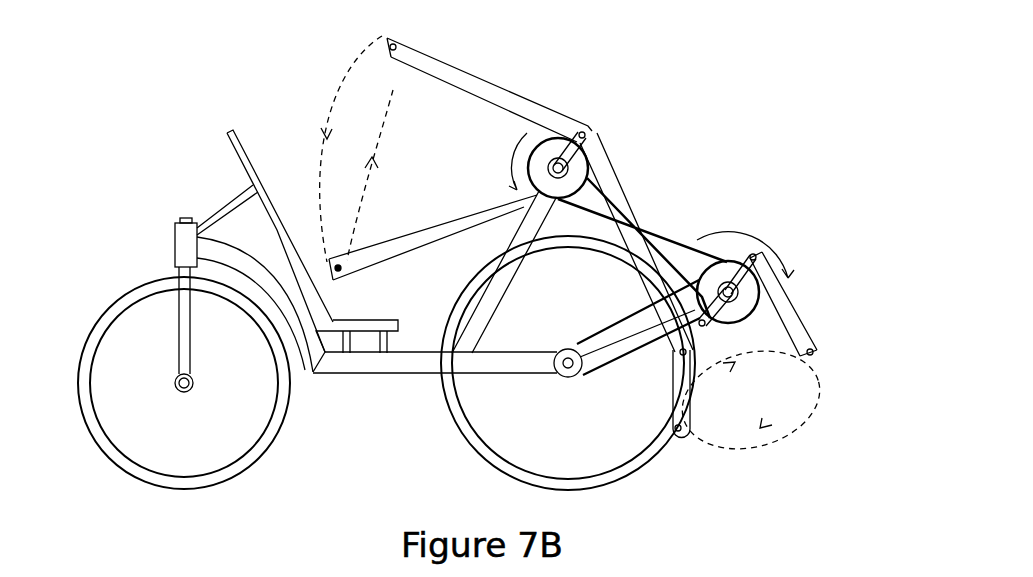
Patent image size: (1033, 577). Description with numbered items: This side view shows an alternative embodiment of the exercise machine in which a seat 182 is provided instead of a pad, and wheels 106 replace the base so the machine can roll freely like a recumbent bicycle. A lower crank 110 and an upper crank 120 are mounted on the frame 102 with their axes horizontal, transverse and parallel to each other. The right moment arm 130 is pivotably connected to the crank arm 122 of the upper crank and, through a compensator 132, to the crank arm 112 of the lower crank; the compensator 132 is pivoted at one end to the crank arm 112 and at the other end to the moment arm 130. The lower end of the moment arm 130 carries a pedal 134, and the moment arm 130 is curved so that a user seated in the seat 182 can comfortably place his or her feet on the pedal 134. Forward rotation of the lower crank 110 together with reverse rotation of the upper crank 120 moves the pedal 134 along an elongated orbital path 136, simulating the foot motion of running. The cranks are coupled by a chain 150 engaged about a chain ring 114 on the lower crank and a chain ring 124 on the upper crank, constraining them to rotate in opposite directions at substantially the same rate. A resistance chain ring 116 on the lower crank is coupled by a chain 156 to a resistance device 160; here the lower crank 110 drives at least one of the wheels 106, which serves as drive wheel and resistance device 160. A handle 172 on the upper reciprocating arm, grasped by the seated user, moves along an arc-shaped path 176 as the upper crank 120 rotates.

The frame 102 is at (337, 422).
The wheels 106 is at (485, 456).
The lower crank 110 is at (745, 252).
The right crank arm of lower crank 112 is at (757, 257).
The chain ring 114 is at (727, 280).
The resistance chain ring 116 is at (728, 292).
The upper crank 120 is at (557, 150).
The right crank arm of upper crank 122 is at (598, 136).
The chain ring 124 is at (544, 150).
The right moment arm 130 is at (462, 223).
The compensator 132 is at (760, 270).
The pedal 134 is at (815, 353).
The elongated orbital path 136 is at (798, 400).
The chain 150 is at (652, 230).
The chain 156 is at (625, 366).
The resistance device 160 is at (558, 370).
The handle 172 is at (345, 261).
The arc-shaped path 176 is at (328, 262).
The seat 182 is at (276, 212).